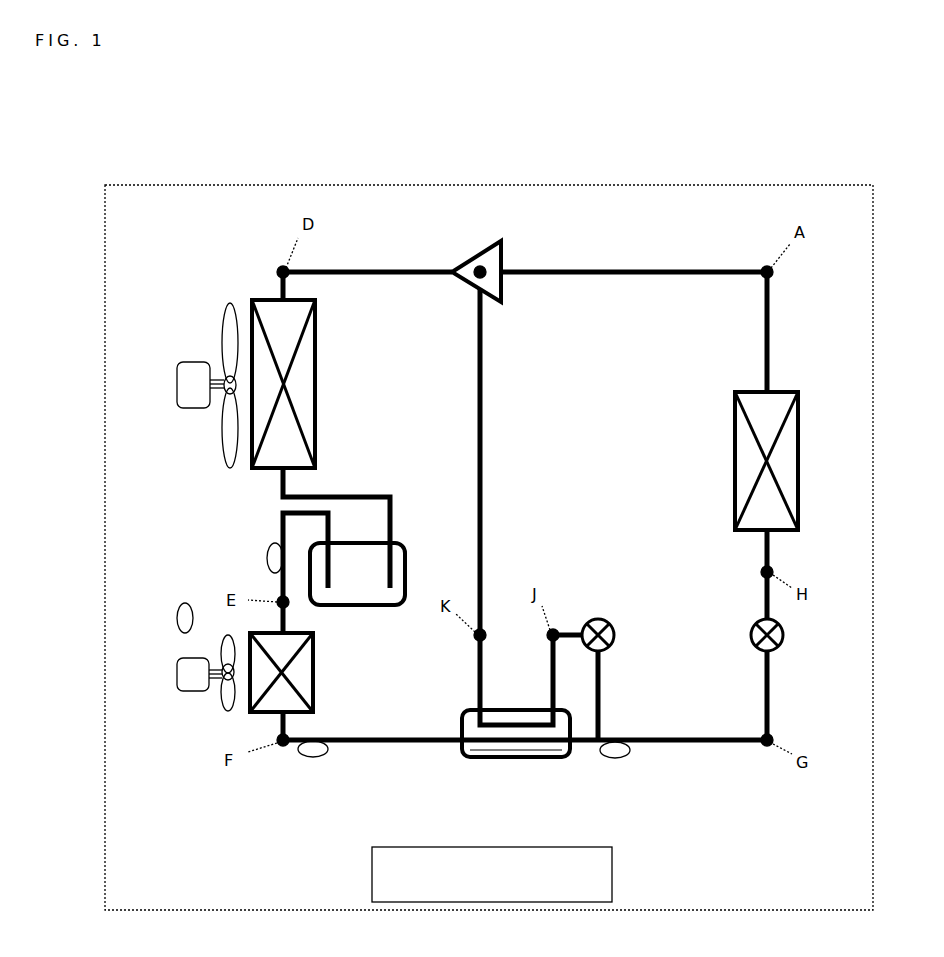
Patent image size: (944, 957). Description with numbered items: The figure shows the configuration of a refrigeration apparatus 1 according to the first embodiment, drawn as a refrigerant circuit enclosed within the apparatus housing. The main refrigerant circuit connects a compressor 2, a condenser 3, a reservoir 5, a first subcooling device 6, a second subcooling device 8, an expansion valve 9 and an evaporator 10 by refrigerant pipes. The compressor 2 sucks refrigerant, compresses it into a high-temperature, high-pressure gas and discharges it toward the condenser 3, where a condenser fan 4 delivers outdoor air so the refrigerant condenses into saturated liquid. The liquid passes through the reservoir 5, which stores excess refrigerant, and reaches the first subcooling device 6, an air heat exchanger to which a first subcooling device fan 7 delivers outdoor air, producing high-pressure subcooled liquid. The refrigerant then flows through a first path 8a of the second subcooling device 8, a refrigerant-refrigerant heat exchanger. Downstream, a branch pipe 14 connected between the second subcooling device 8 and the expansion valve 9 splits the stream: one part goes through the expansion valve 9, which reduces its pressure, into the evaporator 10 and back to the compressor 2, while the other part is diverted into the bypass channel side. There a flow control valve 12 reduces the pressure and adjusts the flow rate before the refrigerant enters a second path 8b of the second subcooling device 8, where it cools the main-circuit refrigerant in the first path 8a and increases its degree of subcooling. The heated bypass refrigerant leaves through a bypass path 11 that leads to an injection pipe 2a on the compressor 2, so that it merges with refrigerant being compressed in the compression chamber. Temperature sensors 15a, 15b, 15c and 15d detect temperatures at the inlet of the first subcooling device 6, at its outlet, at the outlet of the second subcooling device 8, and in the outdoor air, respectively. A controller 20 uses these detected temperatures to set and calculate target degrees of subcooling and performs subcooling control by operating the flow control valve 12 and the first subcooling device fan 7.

The refrigeration apparatus 1 is at (680, 185).
The compressor 2 is at (470, 258).
The injection pipe 2a is at (472, 284).
The condenser 3 is at (318, 382).
The condenser fan 4 is at (180, 362).
The reservoir 5 is at (406, 545).
The first subcooling device 6 is at (318, 686).
The first subcooling device fan 7 is at (180, 688).
The second subcooling device 8 is at (462, 726).
The first path 8a is at (530, 758).
The second path 8b is at (524, 718).
The expansion valve 9 is at (788, 650).
The evaporator 10 is at (804, 462).
The bypass path 11 is at (481, 470).
The flow control valve 12 is at (603, 618).
The branch pipe 14 is at (605, 738).
The temperature sensor 15a is at (266, 562).
The temperature sensor 15b is at (313, 760).
The temperature sensor 15c is at (617, 762).
The temperature sensor 15d is at (176, 612).
The controller 20 is at (613, 885).